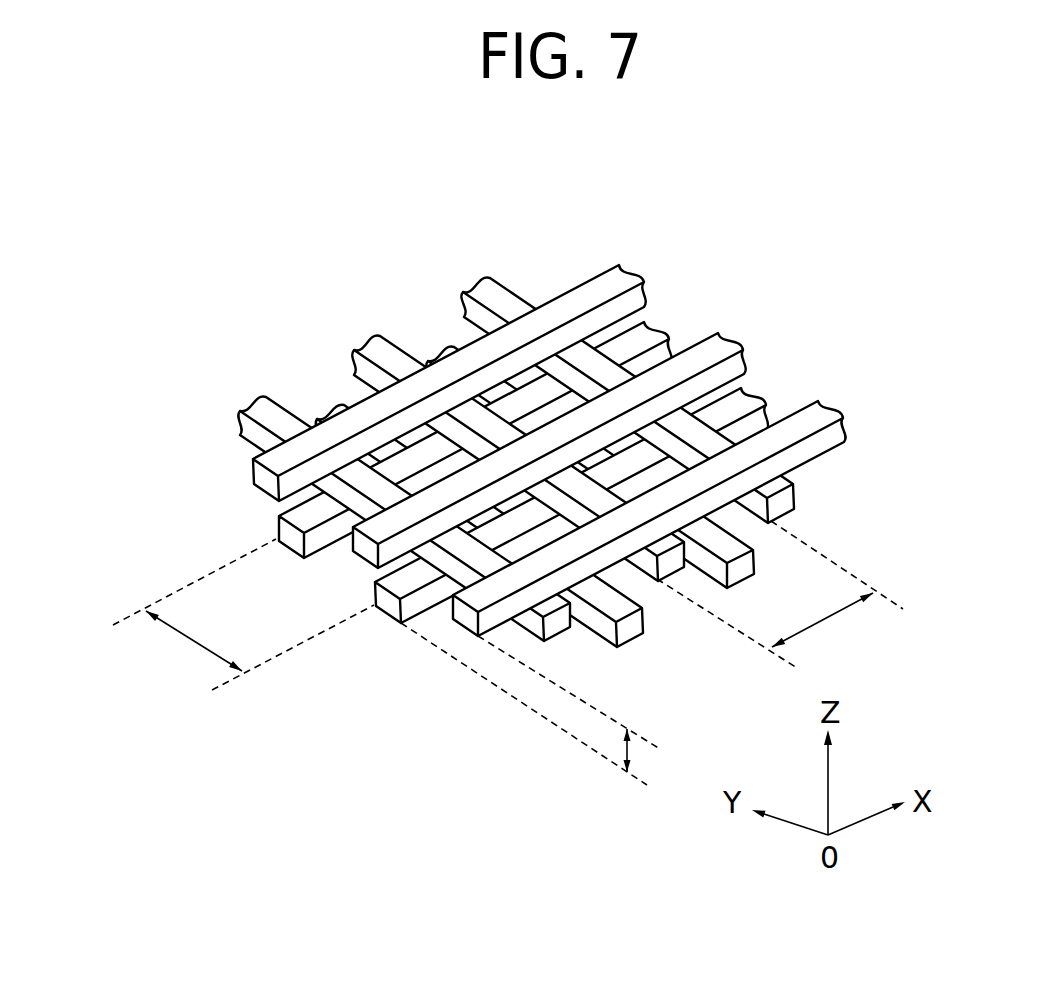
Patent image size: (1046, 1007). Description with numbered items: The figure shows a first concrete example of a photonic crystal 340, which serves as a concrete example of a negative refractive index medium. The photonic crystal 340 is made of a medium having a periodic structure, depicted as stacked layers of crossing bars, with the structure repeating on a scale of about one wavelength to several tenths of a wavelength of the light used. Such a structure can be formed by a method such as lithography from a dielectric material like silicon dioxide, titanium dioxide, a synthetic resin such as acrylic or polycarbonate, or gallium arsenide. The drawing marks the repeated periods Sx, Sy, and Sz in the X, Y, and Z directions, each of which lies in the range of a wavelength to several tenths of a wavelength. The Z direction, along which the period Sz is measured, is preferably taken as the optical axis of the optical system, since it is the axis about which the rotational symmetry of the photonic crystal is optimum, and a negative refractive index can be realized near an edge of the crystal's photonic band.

The photonic crystal 340 is at (200, 483).
The repeated period in X direction Sx is at (780, 594).
The repeated period in Y direction Sy is at (243, 614).
The repeated period in Z direction Sz is at (535, 704).